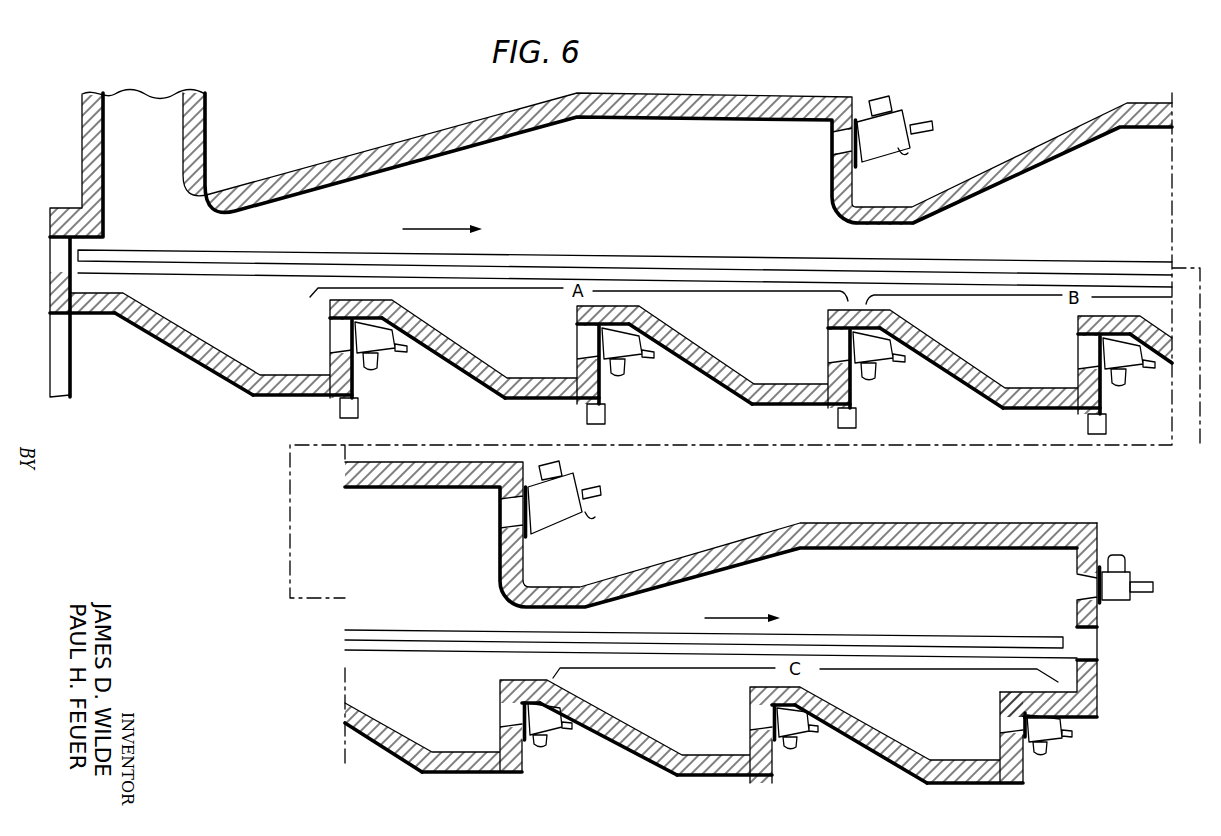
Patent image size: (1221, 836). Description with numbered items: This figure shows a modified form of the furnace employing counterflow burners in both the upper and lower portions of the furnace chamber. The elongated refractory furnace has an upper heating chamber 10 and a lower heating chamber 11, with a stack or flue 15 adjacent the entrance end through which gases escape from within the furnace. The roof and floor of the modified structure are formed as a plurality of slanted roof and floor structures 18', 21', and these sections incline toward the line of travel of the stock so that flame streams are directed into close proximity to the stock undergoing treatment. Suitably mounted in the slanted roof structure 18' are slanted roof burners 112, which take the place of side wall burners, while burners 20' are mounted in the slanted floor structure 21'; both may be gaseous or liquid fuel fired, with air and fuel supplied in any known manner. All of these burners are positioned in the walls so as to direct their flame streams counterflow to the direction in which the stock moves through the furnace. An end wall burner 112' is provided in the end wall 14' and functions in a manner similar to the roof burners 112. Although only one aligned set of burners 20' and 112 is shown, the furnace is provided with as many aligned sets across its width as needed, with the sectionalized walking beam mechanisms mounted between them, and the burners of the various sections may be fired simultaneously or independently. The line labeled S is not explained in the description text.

The upper heating chamber 10 is at (708, 204).
The lower heating chamber 11 is at (783, 362).
The end wall 14' is at (1073, 615).
The stack or flue 15 is at (203, 146).
The slanted roof structure 18' is at (677, 403).
The burner 20' is at (747, 563).
The slanted floor structure 21' is at (643, 543).
The slanted roof burner 112 is at (737, 318).
The end wall burner 112' is at (1142, 578).
The shaft S is at (583, 257).